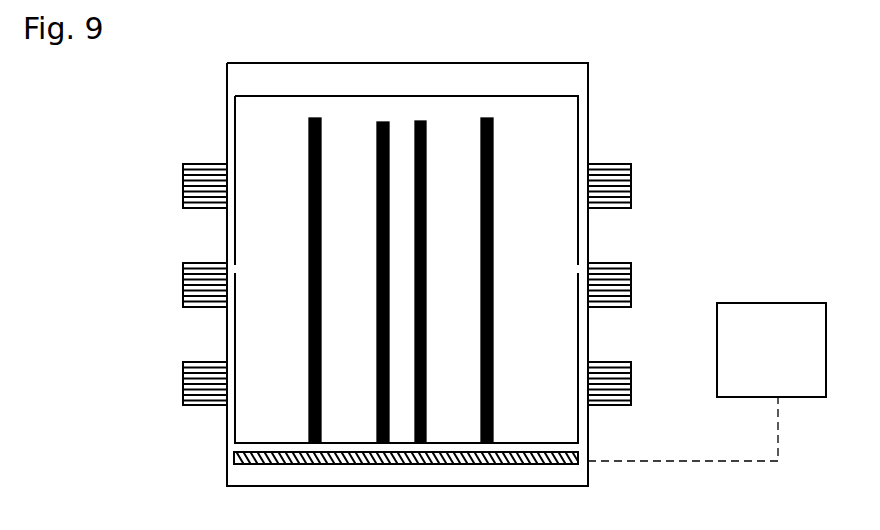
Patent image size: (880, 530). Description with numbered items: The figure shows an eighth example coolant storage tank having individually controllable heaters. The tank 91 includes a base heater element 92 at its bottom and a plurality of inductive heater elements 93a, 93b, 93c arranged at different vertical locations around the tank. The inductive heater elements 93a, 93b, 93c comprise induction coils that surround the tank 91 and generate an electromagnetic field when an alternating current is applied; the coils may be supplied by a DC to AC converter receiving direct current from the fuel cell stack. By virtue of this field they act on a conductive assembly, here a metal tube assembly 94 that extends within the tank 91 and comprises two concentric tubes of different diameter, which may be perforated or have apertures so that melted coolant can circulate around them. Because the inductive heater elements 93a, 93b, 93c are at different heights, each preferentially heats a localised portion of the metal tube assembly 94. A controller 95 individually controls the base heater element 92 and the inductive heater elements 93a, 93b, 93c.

The tank 91 is at (230, 430).
The base heater element 92 is at (265, 463).
The inductive heater element 93a is at (183, 377).
The inductive heater element 93b is at (183, 282).
The inductive heater element 93c is at (188, 185).
The metal tube assembly 94 is at (493, 193).
The controller 95 is at (752, 367).